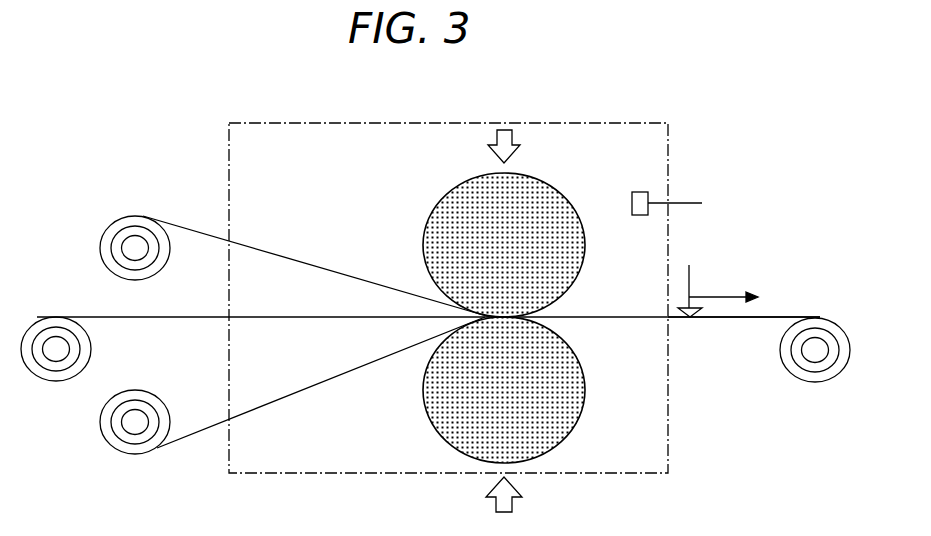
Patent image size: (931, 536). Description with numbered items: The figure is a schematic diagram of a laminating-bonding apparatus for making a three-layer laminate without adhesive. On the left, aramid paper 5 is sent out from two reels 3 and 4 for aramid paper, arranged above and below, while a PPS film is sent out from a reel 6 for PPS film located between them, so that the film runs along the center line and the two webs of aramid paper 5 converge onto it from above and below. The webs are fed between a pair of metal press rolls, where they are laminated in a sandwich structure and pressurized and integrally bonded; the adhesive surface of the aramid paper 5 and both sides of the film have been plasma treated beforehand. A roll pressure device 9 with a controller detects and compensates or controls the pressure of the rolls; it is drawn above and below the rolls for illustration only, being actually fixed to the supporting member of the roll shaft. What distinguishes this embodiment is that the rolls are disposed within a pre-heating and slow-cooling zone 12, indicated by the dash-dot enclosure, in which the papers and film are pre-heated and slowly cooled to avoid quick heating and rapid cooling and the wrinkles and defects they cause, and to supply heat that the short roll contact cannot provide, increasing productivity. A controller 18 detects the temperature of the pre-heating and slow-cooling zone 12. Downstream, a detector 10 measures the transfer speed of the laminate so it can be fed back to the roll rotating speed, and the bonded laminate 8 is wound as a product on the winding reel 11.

The reel for aramid paper 3 is at (158, 268).
The reel for aramid paper 4 is at (100, 425).
The aramid paper 5 is at (307, 263).
The reel for PPS film 6 is at (92, 347).
The laminate 8 is at (778, 317).
The roll pressure device 9 is at (514, 140).
The detector 10 is at (689, 275).
The winding reel 11 is at (815, 383).
The pre-heating and slow-cooling zone 12 is at (612, 123).
The controller 18 is at (680, 203).